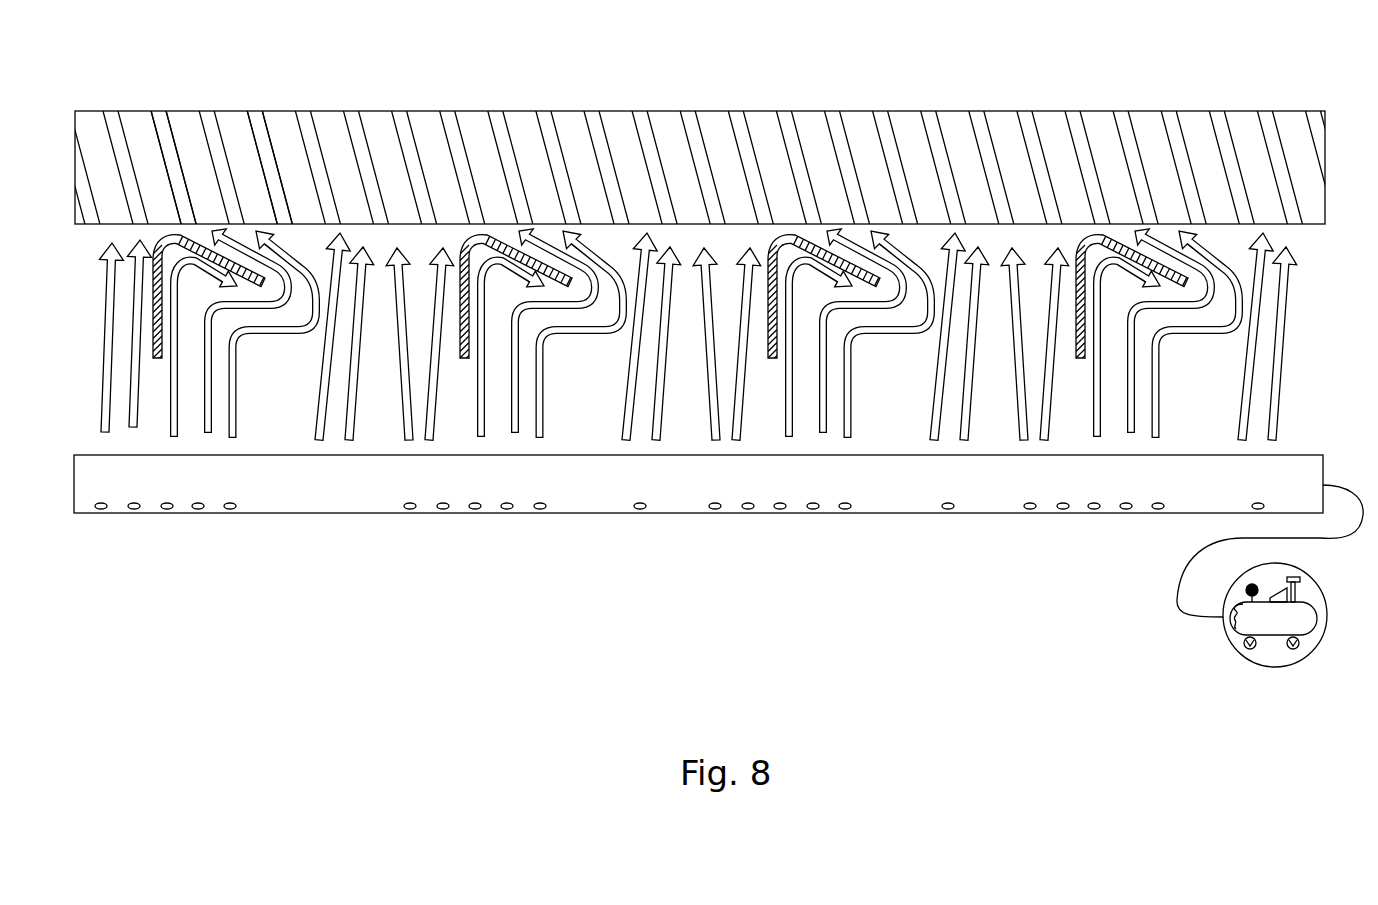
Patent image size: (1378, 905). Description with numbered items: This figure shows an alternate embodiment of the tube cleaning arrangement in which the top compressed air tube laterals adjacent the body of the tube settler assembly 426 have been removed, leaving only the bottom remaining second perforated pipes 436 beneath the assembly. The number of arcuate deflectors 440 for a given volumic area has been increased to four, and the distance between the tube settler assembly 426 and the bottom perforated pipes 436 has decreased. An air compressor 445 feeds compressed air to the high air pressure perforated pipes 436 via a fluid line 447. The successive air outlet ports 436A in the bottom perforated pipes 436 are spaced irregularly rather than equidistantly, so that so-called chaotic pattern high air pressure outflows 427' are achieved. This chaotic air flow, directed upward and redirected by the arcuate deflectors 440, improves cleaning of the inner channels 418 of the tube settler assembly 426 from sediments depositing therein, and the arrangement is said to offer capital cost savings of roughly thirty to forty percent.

The inner channels 418 is at (265, 150).
The tube settler assembly 426 is at (378, 133).
The chaotic pattern high air pressure outflows 427' is at (697, 408).
The arcuate deflectors 440 is at (793, 233).
The bottom perforated pipes 436 is at (327, 495).
The air outlet ports 436A is at (638, 513).
The fluid line 447 is at (1177, 573).
The air compressor 445 is at (1237, 652).